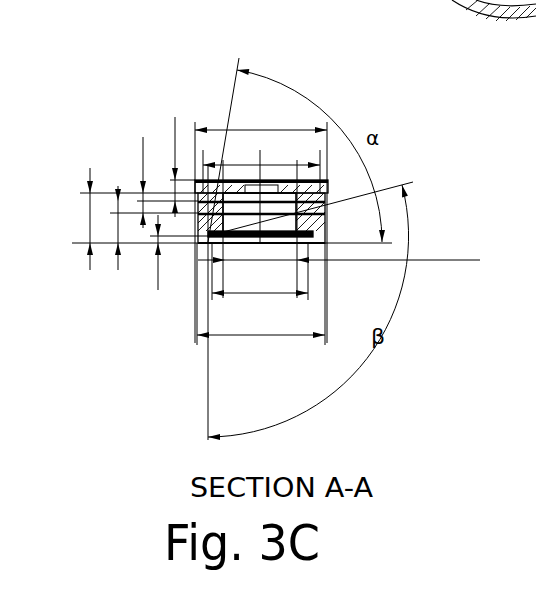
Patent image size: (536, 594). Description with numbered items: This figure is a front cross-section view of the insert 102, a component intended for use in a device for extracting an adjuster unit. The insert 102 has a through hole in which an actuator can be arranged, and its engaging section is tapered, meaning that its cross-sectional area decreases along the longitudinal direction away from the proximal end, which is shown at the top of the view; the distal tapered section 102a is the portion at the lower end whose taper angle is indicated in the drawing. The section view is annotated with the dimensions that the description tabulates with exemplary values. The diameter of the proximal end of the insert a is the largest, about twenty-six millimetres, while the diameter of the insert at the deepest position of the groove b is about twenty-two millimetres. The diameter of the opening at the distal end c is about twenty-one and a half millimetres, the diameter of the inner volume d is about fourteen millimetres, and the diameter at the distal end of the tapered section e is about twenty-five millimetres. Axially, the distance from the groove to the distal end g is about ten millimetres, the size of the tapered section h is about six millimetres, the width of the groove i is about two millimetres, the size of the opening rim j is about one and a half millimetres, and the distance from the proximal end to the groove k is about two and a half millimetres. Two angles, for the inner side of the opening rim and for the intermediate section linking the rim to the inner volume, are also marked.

The insert 102 is at (165, 73).
The distal tapered section 102a is at (433, 2).
The diameter of the proximal end of the insert a is at (261, 120).
The diameter of the insert at the deepest position of the groove b is at (261, 167).
The diameter of the opening at the distal end of the insert c is at (339, 229).
The diameter of the inner volume d is at (260, 271).
The diameter at the distal end of the tapered section e is at (261, 294).
The distance from the groove to the distal end of the insert g is at (130, 219).
The size of the tapered section h is at (148, 228).
The width of the groove i is at (154, 182).
The size of the opening rim of the insert j is at (172, 252).
The distance from the proximal end of the insert to the groove k is at (176, 167).